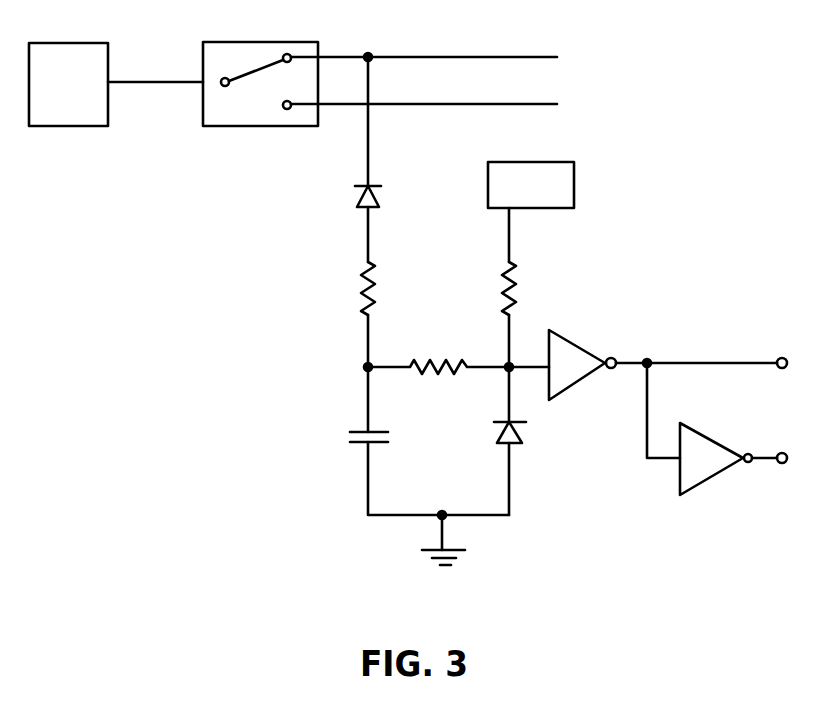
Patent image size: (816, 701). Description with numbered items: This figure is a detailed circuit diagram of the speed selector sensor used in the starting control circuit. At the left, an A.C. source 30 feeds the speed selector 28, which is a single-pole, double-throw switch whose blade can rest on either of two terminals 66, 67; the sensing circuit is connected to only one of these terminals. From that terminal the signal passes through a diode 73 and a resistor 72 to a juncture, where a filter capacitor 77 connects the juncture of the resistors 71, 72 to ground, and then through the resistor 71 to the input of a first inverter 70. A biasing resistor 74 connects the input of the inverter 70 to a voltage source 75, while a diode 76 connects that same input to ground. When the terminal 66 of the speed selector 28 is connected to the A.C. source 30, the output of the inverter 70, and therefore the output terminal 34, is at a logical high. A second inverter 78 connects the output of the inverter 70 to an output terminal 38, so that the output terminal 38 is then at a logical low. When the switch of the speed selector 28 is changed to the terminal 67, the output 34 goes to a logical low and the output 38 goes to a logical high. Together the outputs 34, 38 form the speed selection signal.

The A.C. source 30 is at (93, 120).
The speed selector 28 is at (225, 117).
The terminal 66 is at (281, 50).
The terminal 67 is at (285, 113).
The diode 73 is at (353, 199).
The resistor 72 is at (377, 278).
The resistor 71 is at (432, 360).
The filter capacitor 77 is at (363, 445).
The voltage source 75 is at (574, 177).
The biasing resistor 74 is at (517, 278).
The diode 76 is at (522, 437).
The first inverter 70 is at (573, 345).
The output terminal 34 is at (778, 357).
The inverter 78 is at (712, 470).
The output terminal 38 is at (780, 452).